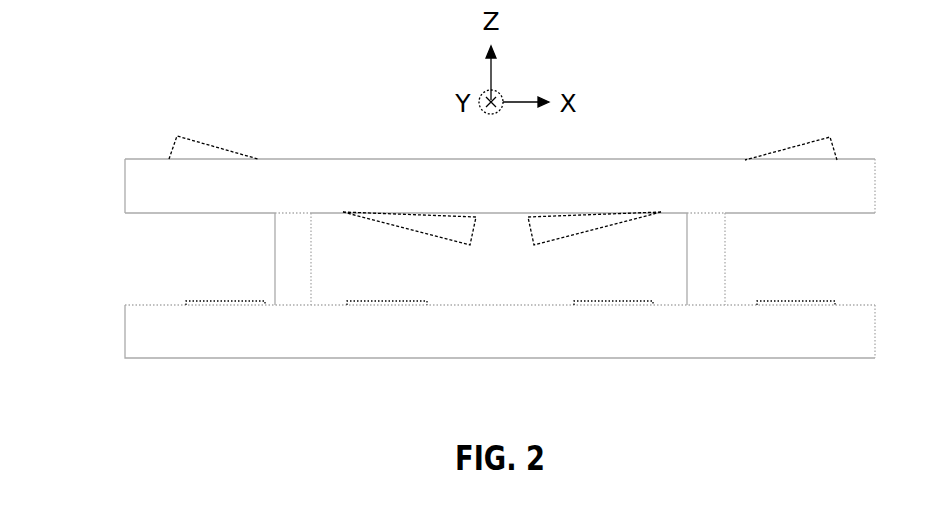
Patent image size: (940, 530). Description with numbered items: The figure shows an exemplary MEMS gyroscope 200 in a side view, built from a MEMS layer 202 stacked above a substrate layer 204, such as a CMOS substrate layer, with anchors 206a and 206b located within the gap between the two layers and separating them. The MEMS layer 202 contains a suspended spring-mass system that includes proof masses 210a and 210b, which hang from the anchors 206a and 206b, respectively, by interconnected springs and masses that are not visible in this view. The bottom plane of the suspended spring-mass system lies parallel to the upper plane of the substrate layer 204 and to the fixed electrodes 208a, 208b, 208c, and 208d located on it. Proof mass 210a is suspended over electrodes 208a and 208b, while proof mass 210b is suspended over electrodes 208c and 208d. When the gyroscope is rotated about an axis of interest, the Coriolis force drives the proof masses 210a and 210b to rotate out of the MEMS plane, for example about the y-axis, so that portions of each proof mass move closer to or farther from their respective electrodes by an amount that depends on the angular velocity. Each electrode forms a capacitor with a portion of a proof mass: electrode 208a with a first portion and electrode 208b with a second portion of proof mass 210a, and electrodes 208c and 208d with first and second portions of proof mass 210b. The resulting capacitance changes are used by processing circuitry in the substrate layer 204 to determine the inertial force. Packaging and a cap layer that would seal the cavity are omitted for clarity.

The MEMS gyroscope 200 is at (357, 101).
The MEMS layer 202 is at (125, 178).
The substrate layer 204 is at (125, 344).
The anchor 206a is at (272, 290).
The anchor 206b is at (685, 290).
The electrode 208a is at (205, 301).
The electrode 208b is at (360, 305).
The electrode 208c is at (592, 305).
The electrode 208d is at (791, 302).
The proof mass 210a is at (172, 141).
The proof mass 210b is at (802, 148).